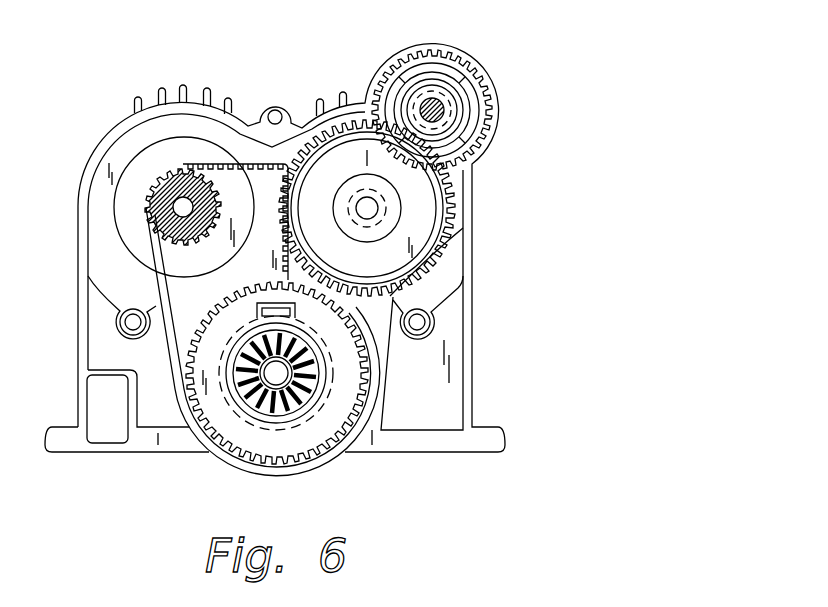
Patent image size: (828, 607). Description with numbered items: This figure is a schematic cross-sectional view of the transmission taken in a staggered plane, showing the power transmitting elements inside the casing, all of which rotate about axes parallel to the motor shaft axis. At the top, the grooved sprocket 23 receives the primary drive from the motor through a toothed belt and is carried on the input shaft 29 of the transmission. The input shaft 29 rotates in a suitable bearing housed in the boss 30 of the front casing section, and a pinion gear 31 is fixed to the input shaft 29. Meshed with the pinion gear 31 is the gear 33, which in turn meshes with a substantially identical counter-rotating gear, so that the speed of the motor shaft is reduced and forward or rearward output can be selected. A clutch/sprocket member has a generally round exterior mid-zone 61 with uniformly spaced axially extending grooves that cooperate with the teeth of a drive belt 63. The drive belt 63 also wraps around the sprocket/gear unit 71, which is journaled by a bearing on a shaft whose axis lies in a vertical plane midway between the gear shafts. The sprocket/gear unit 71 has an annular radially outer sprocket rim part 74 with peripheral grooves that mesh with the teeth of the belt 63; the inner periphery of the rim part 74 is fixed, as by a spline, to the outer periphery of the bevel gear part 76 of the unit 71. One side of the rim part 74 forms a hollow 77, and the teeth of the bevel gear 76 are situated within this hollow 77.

The grooved sprocket 23 is at (468, 102).
The input shaft 29 is at (442, 116).
The boss 30 is at (464, 111).
The pinion gear 31 is at (470, 160).
The gear 33 is at (458, 239).
The exterior mid-zone 61 is at (247, 164).
The drive belt 63 is at (153, 250).
The sprocket/gear unit 71 is at (317, 434).
The sprocket rim part 74 is at (240, 420).
The bevel gear part 76 is at (308, 396).
The hollow 77 is at (270, 452).